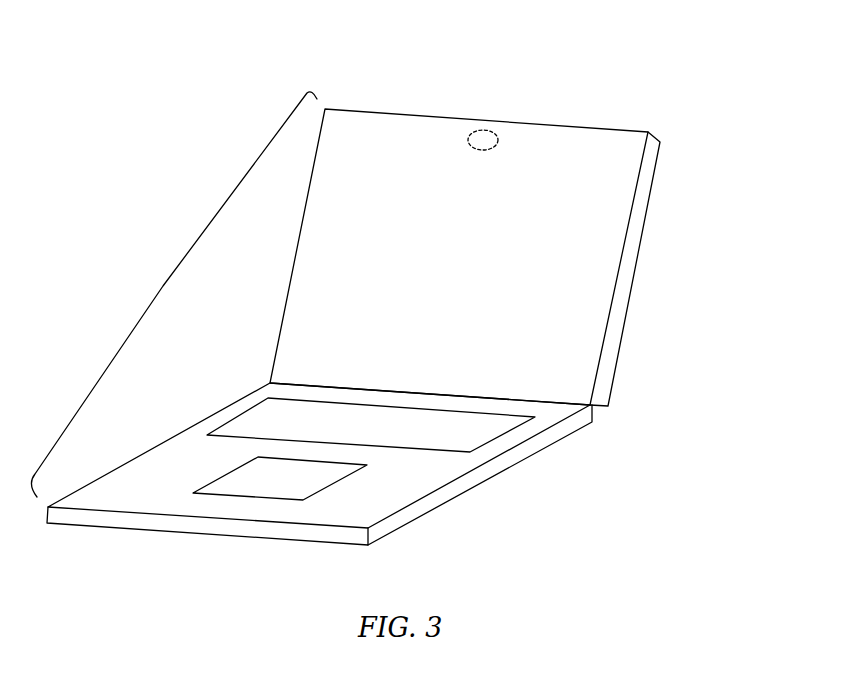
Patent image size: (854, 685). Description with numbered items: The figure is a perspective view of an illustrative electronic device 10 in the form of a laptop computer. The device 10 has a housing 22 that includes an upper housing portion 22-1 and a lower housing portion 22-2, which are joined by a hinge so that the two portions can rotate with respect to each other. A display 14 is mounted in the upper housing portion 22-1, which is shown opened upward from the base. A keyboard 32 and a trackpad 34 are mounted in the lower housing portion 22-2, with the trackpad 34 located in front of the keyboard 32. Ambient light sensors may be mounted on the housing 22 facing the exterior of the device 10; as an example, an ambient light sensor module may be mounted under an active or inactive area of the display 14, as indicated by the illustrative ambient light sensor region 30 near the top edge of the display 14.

The device 10 is at (667, 55).
The housing 22 is at (165, 284).
The upper housing portion 22-1 is at (657, 173).
The lower housing portion 22-2 is at (443, 503).
The display 14 is at (585, 280).
The ambient light sensor region 30 is at (483, 128).
The keyboard 32 is at (505, 435).
The trackpad 34 is at (255, 501).